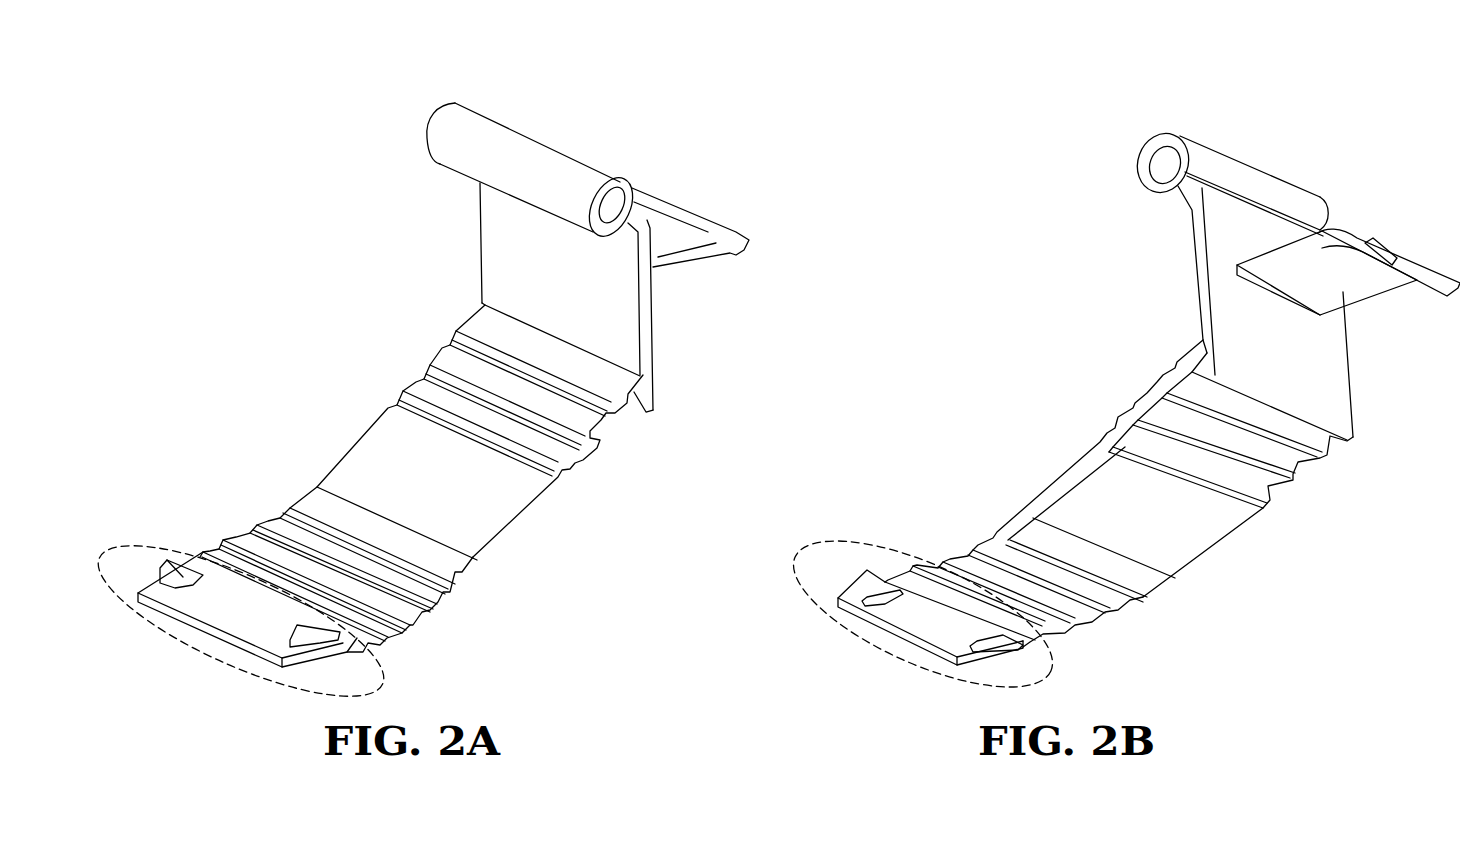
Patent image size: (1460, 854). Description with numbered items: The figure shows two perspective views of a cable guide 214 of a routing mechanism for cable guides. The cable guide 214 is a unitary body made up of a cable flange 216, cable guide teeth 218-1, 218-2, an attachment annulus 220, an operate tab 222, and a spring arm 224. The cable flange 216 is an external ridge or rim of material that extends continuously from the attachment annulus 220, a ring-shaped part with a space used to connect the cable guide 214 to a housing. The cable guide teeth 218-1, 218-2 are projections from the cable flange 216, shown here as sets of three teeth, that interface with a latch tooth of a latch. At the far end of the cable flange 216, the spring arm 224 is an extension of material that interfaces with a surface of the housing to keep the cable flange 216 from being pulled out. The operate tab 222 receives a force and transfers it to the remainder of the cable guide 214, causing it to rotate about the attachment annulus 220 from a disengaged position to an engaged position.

In FIG. 2A, the cable guide 214 is at (287, 94).
In FIG. 2B, the cable guide 214 is at (1036, 108).
In FIG. 2A, the cable flange 216 is at (353, 440).
In FIG. 2B, the cable flange 216 is at (1048, 480).
In FIG. 2A, the cable guide tooth 218-1 is at (604, 458).
In FIG. 2B, the cable guide tooth 218-1 is at (1322, 470).
In FIG. 2A, the cable guide tooth 218-2 is at (414, 627).
In FIG. 2B, the cable guide tooth 218-2 is at (1130, 627).
In FIG. 2A, the attachment annulus 220 is at (432, 121).
In FIG. 2B, the attachment annulus 220 is at (1144, 134).
In FIG. 2A, the operate tab 222 is at (663, 205).
In FIG. 2B, the operate tab 222 is at (1354, 231).
In FIG. 2A, the spring arm 224 is at (104, 553).
In FIG. 2B, the spring arm 224 is at (800, 557).